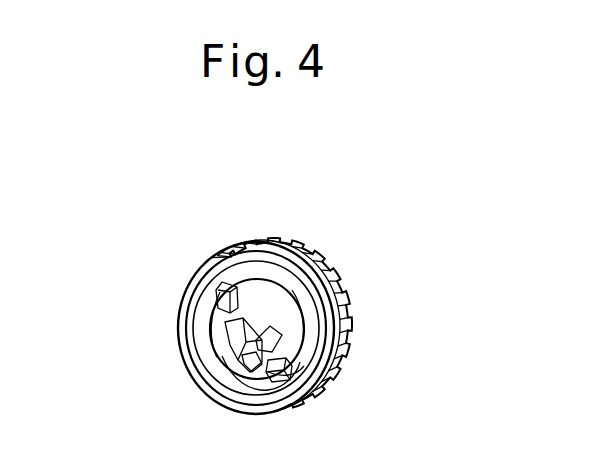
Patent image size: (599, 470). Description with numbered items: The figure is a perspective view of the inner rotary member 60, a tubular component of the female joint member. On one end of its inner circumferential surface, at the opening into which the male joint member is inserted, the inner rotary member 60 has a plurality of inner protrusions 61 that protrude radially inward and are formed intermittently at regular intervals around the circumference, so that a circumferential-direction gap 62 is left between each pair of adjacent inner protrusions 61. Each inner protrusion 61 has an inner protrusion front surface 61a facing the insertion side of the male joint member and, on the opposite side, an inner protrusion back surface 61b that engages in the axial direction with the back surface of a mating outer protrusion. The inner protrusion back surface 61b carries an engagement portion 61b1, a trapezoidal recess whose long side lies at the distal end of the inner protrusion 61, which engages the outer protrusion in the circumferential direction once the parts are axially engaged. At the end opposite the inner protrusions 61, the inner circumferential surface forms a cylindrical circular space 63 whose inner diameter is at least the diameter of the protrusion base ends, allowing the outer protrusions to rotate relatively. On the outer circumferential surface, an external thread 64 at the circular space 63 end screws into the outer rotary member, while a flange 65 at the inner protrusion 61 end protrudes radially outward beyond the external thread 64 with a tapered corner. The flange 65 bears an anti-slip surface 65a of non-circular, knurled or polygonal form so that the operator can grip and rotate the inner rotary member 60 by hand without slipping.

The inner rotary member 60 is at (292, 291).
The inner protrusions 61 is at (237, 343).
The inner protrusion front surface 61a is at (257, 340).
The inner protrusion back surface 61b is at (242, 363).
The engagement portion 61b1 is at (242, 353).
The circumferential-direction gap 62 is at (223, 326).
The circular space 63 is at (257, 392).
The external thread 64 is at (246, 254).
The flange 65 is at (278, 238).
The anti-slip surface 65a is at (309, 255).